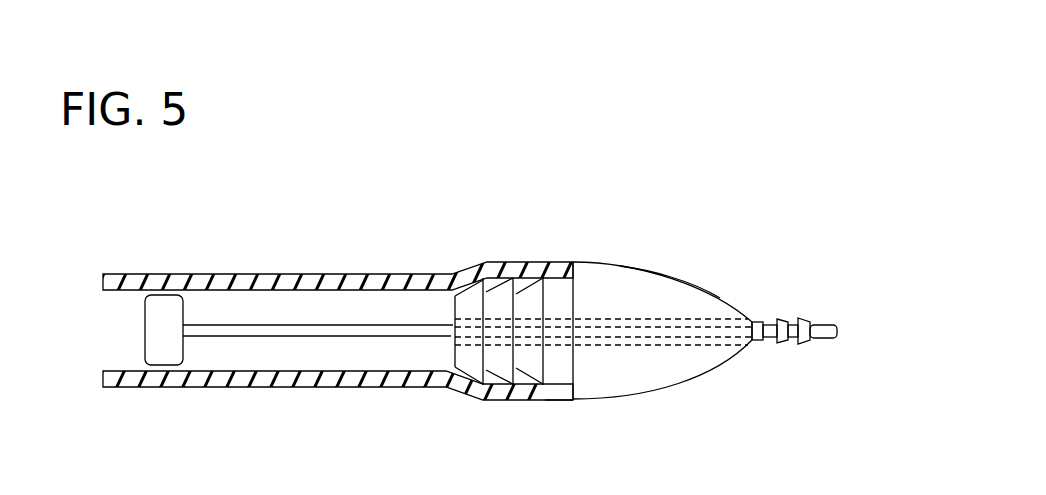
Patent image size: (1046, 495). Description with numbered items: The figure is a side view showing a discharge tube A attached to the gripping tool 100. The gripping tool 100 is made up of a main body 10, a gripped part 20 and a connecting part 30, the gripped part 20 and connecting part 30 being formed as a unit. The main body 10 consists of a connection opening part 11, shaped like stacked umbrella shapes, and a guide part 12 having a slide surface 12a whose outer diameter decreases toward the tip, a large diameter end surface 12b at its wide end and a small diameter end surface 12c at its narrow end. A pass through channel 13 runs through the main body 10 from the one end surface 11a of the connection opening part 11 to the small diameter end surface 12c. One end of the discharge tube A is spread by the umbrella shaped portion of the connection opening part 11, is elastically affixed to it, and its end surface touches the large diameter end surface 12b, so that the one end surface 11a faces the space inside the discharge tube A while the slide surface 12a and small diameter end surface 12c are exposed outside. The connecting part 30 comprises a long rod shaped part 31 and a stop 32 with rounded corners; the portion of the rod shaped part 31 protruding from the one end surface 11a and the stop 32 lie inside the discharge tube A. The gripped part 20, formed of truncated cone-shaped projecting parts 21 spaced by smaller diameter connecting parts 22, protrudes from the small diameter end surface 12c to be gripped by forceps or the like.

The gripping tool 100 is at (658, 227).
The main body 10 is at (605, 258).
The connection opening part 11 is at (514, 388).
The one end surface 11a is at (453, 357).
The guide part 12 is at (660, 377).
The slide surface 12a is at (668, 276).
The large diameter end surface 12b is at (560, 402).
The small diameter end surface 12c is at (762, 342).
The pass through channel 13 is at (612, 340).
The gripped part 20 is at (827, 314).
The projecting part 21 is at (753, 320).
The connecting part 22 is at (773, 321).
The connecting part 30 is at (393, 318).
The rod shaped part 31 is at (347, 334).
The stop 32 is at (165, 355).
The discharge tube A is at (262, 273).